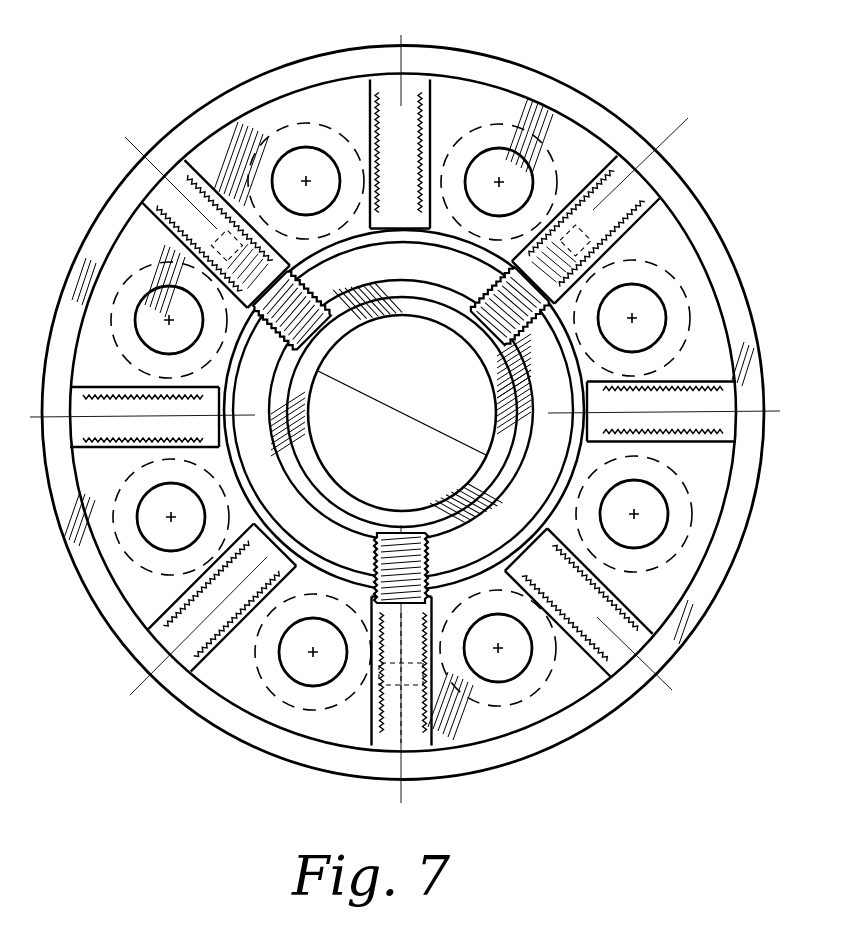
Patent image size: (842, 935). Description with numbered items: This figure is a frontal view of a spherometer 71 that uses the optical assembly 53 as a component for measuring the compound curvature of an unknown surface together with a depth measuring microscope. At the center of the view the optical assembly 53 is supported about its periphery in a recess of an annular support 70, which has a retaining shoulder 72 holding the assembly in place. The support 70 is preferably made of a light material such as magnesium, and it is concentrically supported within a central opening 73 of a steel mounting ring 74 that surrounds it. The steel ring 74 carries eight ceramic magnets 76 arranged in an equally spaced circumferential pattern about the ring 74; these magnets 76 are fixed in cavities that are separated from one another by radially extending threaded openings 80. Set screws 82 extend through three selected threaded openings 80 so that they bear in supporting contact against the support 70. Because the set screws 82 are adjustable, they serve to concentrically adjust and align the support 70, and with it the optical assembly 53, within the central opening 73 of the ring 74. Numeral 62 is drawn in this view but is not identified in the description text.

The spherometer 71 is at (166, 86).
The steel mounting ring 74 is at (590, 112).
The ceramic magnets 76 is at (284, 168).
The set screws 82 is at (308, 292).
The optical assembly 53 is at (390, 353).
The central opening 73 is at (570, 336).
The annular support 70 is at (488, 480).
The retaining shoulder 72 is at (453, 492).
The central bore 62 is at (406, 412).
The threaded openings 80 is at (650, 685).